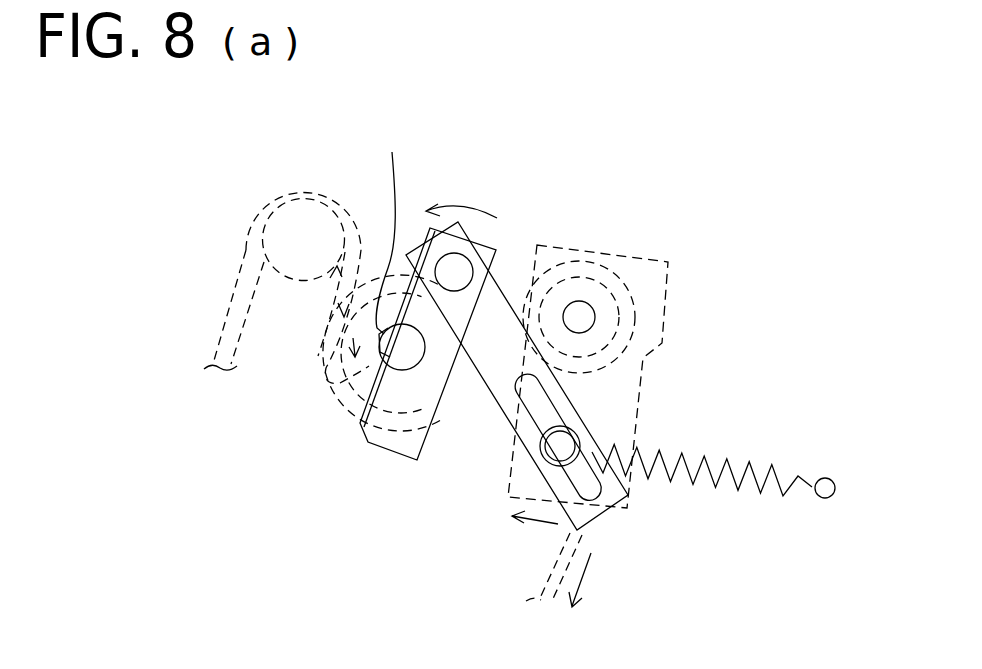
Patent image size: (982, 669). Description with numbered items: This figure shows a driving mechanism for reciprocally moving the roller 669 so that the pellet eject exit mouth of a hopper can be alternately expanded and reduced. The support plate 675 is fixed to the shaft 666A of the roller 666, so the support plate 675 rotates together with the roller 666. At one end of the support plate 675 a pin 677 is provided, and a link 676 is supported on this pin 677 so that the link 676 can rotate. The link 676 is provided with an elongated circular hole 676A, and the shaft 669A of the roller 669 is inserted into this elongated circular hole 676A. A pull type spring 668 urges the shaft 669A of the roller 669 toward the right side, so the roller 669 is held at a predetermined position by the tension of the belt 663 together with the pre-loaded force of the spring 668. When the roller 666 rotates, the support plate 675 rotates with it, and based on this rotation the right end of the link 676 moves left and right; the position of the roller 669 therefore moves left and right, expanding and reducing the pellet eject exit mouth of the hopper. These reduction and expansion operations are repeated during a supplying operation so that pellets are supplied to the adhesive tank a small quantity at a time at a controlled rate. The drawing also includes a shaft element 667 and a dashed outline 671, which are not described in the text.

The belt 663 is at (279, 192).
The roller 666 is at (352, 380).
The shaft of the roller 666A is at (399, 225).
The shaft 667 is at (607, 311).
The pull type spring 668 is at (775, 472).
The roller 669 is at (541, 405).
The shaft of the roller 669A is at (580, 417).
The support body 671 is at (667, 260).
The support plate 675 is at (391, 438).
The link 676 is at (490, 307).
The elongated circular hole 676A is at (527, 380).
The pin 677 is at (460, 268).